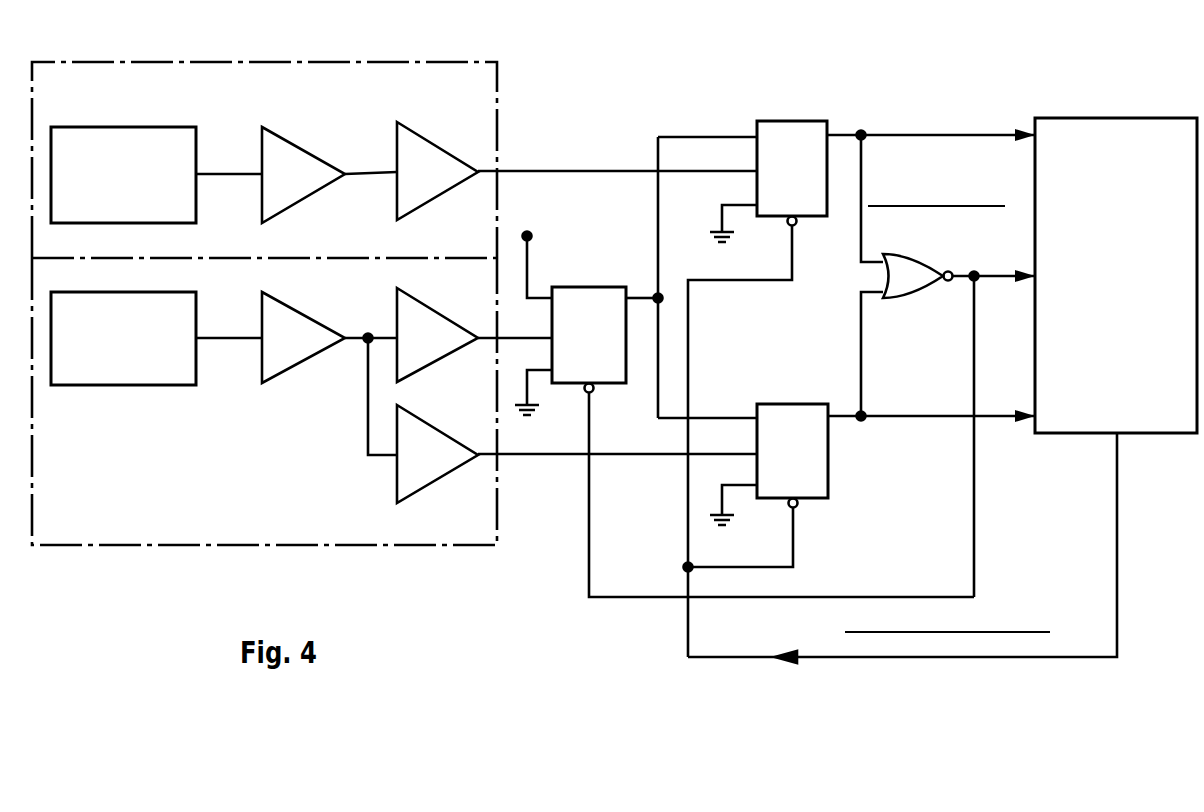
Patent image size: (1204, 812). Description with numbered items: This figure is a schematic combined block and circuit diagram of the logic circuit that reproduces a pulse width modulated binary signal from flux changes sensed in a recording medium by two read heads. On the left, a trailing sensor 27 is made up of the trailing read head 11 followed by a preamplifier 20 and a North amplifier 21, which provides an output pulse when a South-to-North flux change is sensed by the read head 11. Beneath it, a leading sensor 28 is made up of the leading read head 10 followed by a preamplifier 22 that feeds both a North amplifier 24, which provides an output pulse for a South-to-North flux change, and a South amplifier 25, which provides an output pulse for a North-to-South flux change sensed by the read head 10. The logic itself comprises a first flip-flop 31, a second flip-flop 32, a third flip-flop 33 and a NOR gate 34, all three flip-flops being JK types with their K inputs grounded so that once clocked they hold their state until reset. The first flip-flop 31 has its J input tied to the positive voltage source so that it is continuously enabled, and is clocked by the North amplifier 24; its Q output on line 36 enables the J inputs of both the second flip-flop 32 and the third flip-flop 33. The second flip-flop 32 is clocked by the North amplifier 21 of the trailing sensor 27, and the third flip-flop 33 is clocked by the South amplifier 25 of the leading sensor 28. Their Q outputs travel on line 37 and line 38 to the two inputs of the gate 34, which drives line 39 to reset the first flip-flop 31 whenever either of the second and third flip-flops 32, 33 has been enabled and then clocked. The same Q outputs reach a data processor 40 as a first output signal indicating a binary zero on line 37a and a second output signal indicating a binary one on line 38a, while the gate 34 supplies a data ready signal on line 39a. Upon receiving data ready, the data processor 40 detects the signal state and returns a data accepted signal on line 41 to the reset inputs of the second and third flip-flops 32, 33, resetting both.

The leading read head 10 is at (160, 385).
The trailing read head 11 is at (138, 127).
The preamplifier 20 is at (292, 140).
The North amplifier 21 is at (432, 140).
The preamplifier 22 is at (305, 366).
The North amplifier 24 is at (447, 356).
The South amplifier 25 is at (447, 478).
The trailing sensor 27 is at (290, 62).
The leading sensor 28 is at (330, 545).
The first flip-flop 31 is at (572, 286).
The second flip-flop 32 is at (785, 121).
The third flip-flop 33 is at (790, 404).
The gate 34 is at (915, 297).
The line 36 is at (643, 297).
The line 37 is at (850, 135).
The line 37a is at (950, 137).
The line 38 is at (845, 418).
The line 38a is at (997, 418).
The line 39 is at (974, 512).
The line 39a is at (983, 278).
The data processor 40 is at (1068, 118).
The line 41 is at (1117, 488).